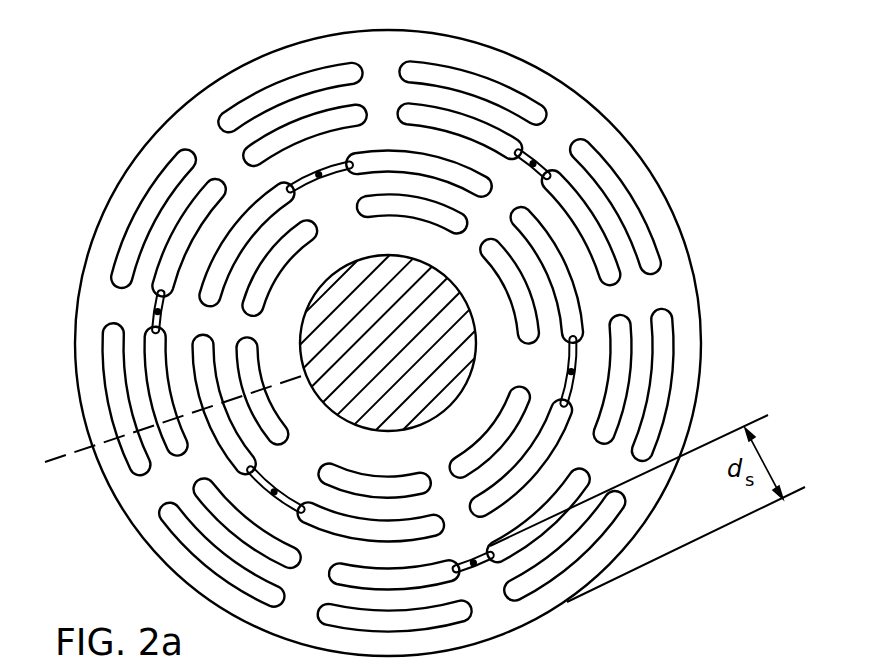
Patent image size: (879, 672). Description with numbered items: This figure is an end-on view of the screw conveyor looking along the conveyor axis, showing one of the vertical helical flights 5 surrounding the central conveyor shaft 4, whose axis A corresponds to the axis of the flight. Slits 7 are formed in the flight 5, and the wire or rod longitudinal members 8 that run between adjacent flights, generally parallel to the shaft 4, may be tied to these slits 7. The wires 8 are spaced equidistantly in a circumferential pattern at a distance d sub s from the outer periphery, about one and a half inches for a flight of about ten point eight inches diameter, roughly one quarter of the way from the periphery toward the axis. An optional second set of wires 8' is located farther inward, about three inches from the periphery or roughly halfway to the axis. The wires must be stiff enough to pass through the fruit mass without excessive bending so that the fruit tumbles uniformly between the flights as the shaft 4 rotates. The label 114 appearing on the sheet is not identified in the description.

The conveyor shaft 4 is at (412, 418).
The helical flight 5 is at (110, 198).
The slit 7 is at (652, 268).
The wire longitudinal member 8 is at (334, 354).
The second set of wires 8' is at (431, 337).
The reference 114 is at (661, 660).